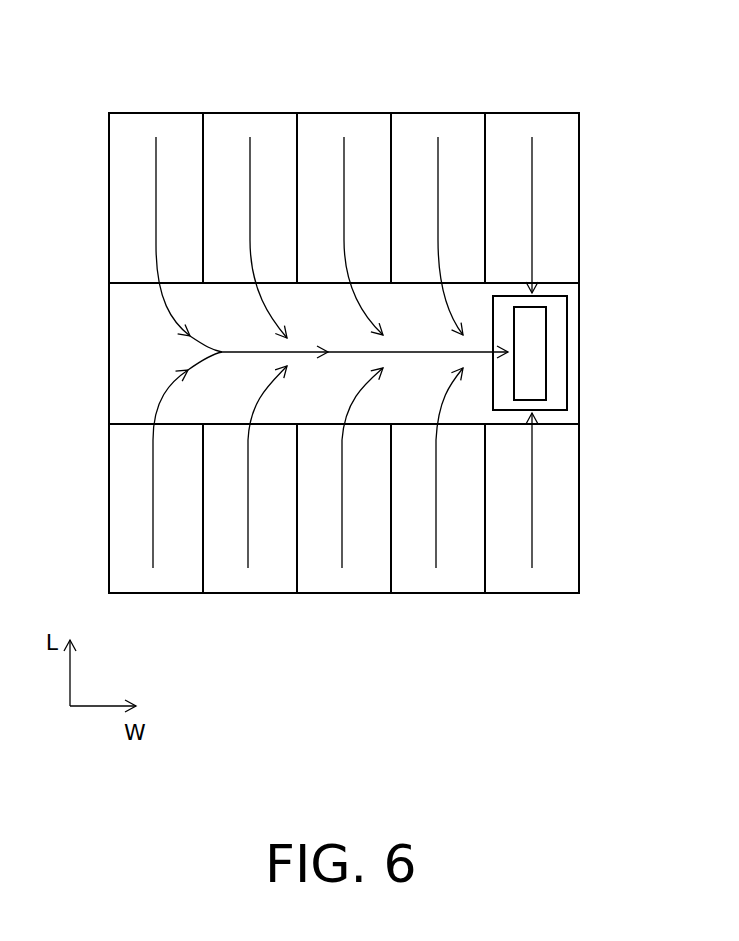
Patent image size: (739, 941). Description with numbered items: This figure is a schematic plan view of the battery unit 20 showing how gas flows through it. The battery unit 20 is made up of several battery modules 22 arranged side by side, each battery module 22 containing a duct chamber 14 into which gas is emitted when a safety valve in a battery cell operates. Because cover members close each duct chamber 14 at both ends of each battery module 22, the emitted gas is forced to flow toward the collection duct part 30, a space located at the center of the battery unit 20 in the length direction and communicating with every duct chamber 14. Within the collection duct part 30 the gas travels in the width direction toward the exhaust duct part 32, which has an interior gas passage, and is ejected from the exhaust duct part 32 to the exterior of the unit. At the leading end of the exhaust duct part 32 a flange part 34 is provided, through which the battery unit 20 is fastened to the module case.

The duct chamber 14 is at (233, 125).
The battery unit 20 is at (584, 88).
The battery module 22 is at (151, 596).
The collection duct part 30 is at (137, 355).
The exhaust duct part 32 is at (575, 366).
The flange part 34 is at (556, 333).